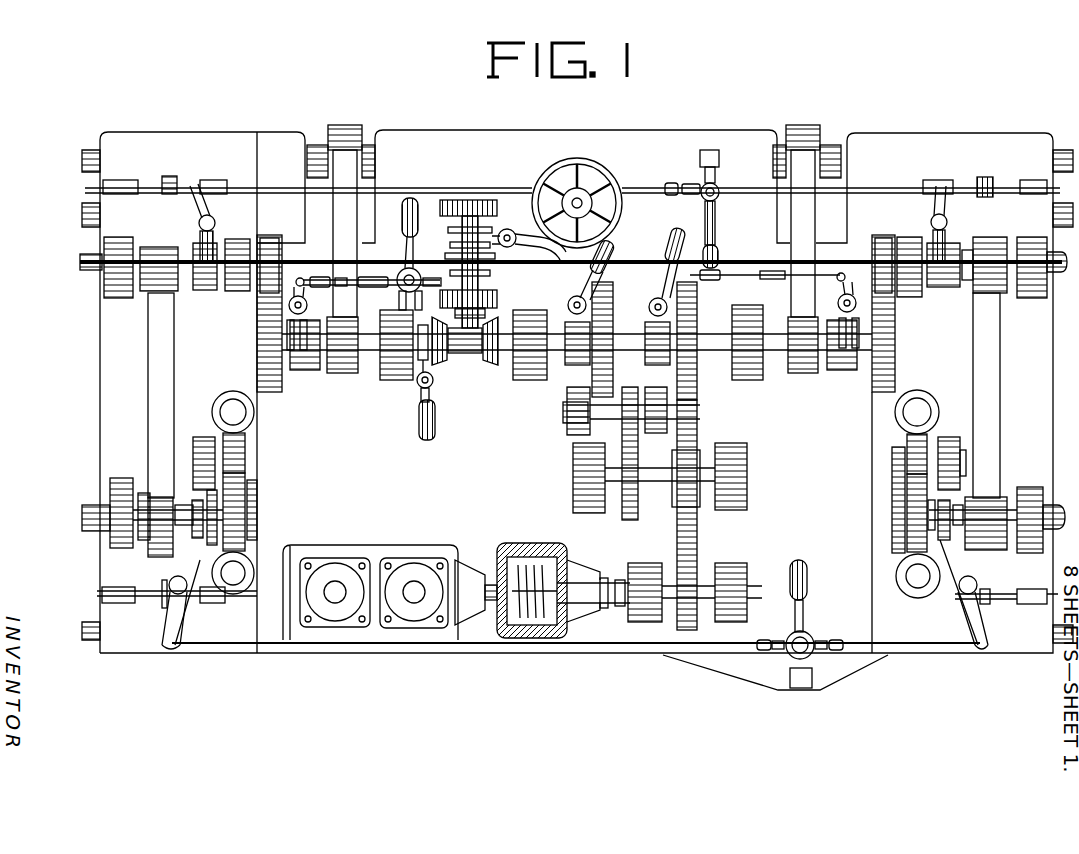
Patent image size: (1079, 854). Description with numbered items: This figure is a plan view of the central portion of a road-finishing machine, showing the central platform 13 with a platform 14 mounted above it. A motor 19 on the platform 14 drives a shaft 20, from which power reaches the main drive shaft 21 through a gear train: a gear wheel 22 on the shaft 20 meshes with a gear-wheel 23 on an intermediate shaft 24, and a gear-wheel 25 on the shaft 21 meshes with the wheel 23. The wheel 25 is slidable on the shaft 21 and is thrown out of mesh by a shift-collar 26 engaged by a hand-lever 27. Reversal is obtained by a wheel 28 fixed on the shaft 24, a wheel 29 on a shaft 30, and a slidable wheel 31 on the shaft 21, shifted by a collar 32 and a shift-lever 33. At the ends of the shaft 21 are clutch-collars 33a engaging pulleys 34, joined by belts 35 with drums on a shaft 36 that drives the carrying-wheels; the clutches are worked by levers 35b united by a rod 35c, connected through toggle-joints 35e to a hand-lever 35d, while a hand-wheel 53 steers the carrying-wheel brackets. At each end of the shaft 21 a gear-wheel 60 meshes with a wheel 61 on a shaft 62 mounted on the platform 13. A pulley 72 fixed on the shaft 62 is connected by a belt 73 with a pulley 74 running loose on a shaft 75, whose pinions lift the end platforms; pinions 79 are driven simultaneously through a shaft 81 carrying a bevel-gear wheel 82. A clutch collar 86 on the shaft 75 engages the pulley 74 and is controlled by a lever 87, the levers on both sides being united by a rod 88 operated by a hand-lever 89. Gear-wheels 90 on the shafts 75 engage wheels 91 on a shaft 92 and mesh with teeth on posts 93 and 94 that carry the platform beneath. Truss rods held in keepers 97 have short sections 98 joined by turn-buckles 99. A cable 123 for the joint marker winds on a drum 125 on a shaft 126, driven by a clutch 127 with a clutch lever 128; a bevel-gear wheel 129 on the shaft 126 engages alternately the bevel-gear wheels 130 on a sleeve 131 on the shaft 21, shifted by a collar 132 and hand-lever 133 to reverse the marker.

The central platform 13 is at (193, 140).
The platform 14 is at (611, 634).
The motor 19 is at (405, 635).
The shaft 20 is at (710, 578).
The main drive shaft 21 is at (712, 340).
The gear wheel 22 is at (670, 562).
The gear-wheel 23 is at (698, 534).
The intermediate shaft 24 is at (703, 473).
The gear-wheel 25 is at (698, 322).
The shift-collar 26 is at (645, 330).
The hand-lever 27 is at (667, 246).
The wheel 28 is at (617, 500).
The wheel 29 is at (637, 418).
The shaft 30 is at (608, 408).
The wheel 31 is at (568, 400).
The collar 32 is at (560, 372).
The shift-lever 33 is at (580, 292).
The clutch-collars 33a is at (845, 372).
The pulleys 34 is at (350, 375).
The belts 35 is at (347, 125).
The levers 35b is at (858, 227).
The rod 35c is at (740, 273).
The hand-lever 35d is at (409, 197).
The toggle-joints 35e is at (432, 277).
The shaft 36 is at (315, 145).
The hand-wheel 53 is at (610, 172).
The gear-wheel 60 is at (262, 348).
The wheel 61 is at (262, 288).
The shaft 62 is at (106, 282).
The pulley 72 is at (1000, 247).
The belt 73 is at (148, 385).
The pulley 74 is at (146, 495).
The shaft 75 is at (97, 512).
The gear pinions 79 is at (945, 292).
The shaft 81 is at (450, 188).
The bevel-gear wheel 82 is at (722, 220).
The clutch collar 86 is at (262, 530).
The lever 87 is at (180, 619).
The rod 88 is at (522, 643).
The hand-lever 89 is at (805, 619).
The gear-wheels 90 is at (248, 490).
The wheels 91 is at (247, 435).
The shaft 92 is at (936, 458).
The post 93 is at (235, 578).
The post 94 is at (230, 410).
The keepers 97 is at (148, 591).
The short sections 98 is at (123, 603).
The turn-buckles 99 is at (1045, 605).
The cable 123 is at (88, 262).
The drum 125 is at (493, 263).
The shaft 126 is at (497, 297).
The clutch 127 is at (462, 226).
The clutch lever 128 is at (537, 237).
The bevel-gear wheel 129 is at (478, 356).
The bevel-gear wheels 130 is at (441, 370).
The sleeve 131 is at (475, 358).
The collar 132 is at (408, 362).
The hand-lever 133 is at (422, 397).